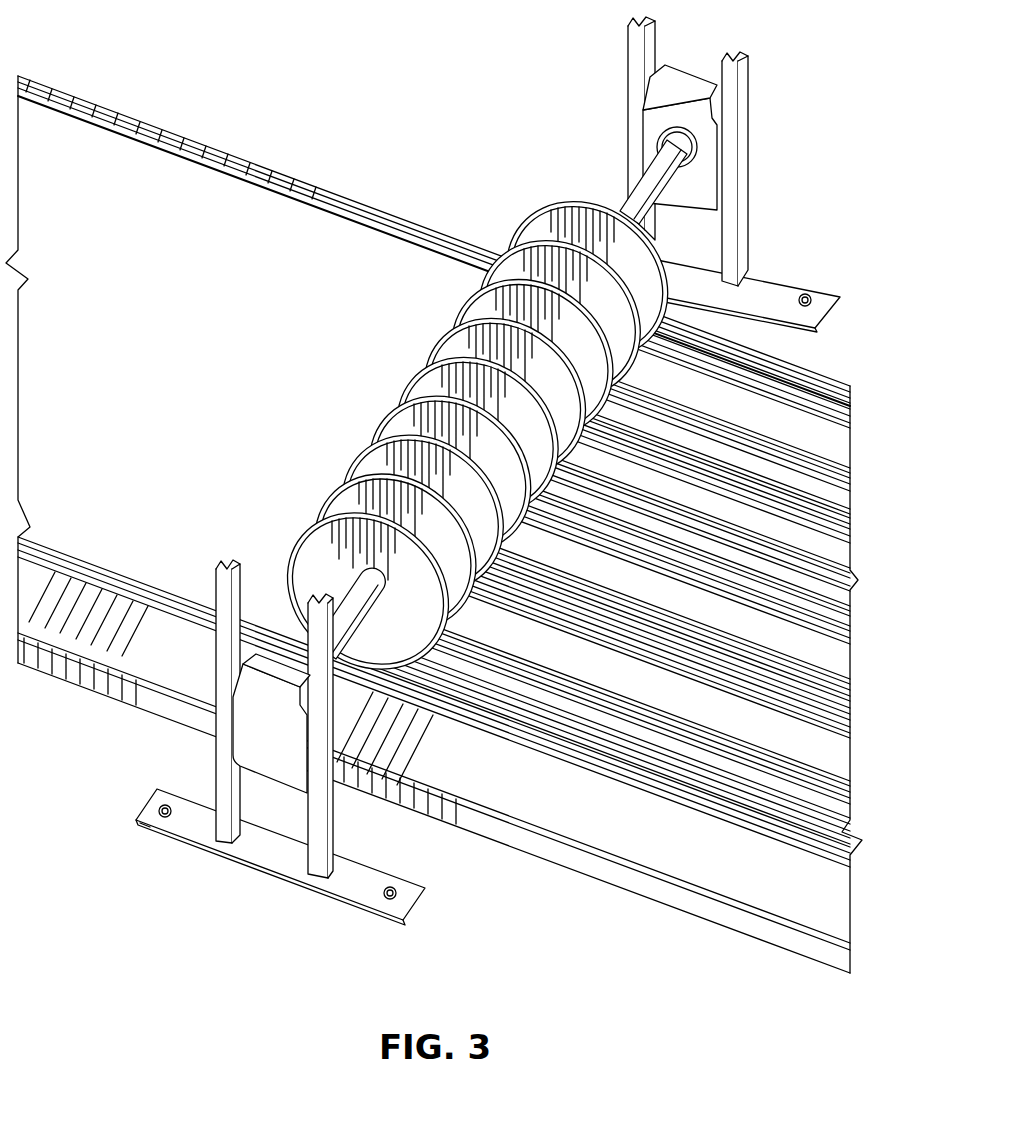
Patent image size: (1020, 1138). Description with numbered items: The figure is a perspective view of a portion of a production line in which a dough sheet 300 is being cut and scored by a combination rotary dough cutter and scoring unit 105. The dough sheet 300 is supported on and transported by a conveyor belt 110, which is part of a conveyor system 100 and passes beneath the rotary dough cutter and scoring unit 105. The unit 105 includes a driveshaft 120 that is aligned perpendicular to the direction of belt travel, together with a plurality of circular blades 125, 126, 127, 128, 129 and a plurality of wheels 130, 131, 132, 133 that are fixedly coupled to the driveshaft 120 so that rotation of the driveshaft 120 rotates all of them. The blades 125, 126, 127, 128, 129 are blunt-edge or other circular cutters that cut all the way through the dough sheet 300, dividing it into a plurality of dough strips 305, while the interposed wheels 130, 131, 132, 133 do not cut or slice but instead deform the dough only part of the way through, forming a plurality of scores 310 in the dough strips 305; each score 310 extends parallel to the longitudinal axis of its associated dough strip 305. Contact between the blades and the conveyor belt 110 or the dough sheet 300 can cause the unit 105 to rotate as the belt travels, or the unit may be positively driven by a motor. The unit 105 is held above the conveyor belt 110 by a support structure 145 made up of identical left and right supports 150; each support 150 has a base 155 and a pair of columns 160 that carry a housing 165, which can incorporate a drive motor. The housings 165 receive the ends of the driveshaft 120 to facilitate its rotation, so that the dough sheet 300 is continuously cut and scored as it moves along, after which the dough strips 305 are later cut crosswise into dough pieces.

The conveyor system 100 is at (623, 893).
The combination rotary dough cutter and scoring unit 105 is at (403, 648).
The conveyor belt 110 is at (710, 918).
The driveshaft 120 is at (625, 193).
The circular blade 125 is at (297, 533).
The circular blade 126 is at (357, 457).
The circular blade 127 is at (403, 380).
The circular blade 128 is at (453, 317).
The circular blade 129 is at (545, 207).
The wheel 130 is at (345, 492).
The wheel 131 is at (380, 420).
The wheel 132 is at (427, 355).
The wheel 133 is at (493, 247).
The support structure 145 is at (200, 848).
The support 150 is at (267, 875).
The base 155 is at (347, 900).
The column 160 is at (630, 86).
The housing 165 is at (697, 73).
The dough sheet 300 is at (157, 187).
The dough strip 305 is at (838, 447).
The score 310 is at (838, 472).